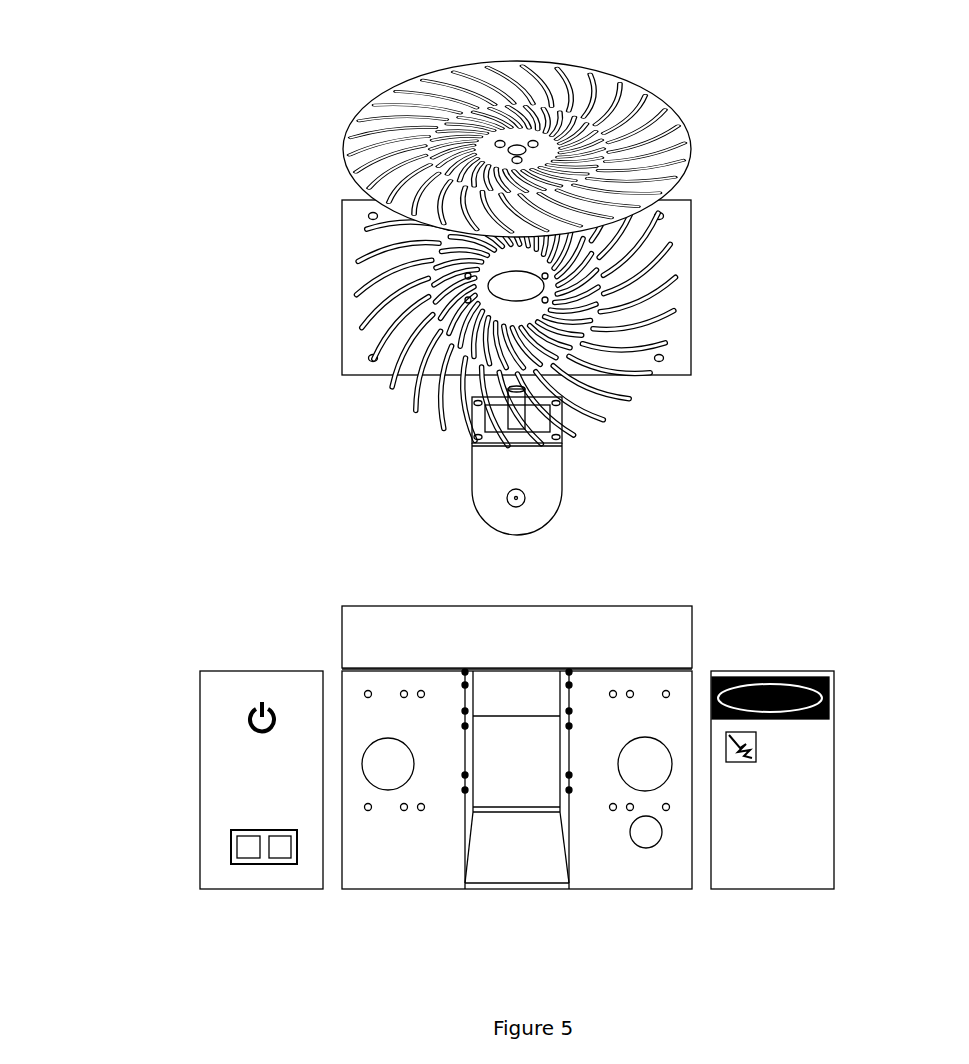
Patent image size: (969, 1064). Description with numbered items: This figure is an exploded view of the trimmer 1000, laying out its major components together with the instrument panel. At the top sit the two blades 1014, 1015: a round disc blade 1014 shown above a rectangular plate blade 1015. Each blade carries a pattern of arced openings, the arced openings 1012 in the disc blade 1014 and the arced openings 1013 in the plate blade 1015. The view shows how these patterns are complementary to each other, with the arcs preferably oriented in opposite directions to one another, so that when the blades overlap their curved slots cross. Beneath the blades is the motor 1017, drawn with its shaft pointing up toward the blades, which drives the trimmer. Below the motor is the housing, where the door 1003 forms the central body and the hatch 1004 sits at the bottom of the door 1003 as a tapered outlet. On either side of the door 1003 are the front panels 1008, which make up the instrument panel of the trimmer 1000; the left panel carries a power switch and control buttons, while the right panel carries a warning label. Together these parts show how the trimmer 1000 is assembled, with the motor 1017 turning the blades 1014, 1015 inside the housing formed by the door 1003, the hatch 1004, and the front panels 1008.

The trimmer 1000 is at (192, 398).
The door 1003 is at (518, 765).
The hatch 1004 is at (508, 889).
The front panels 1008 is at (200, 782).
The arced openings 1012 is at (400, 102).
The arced openings 1013 is at (437, 342).
The blade 1014 is at (645, 104).
The blade 1015 is at (650, 300).
The motor 1017 is at (563, 486).